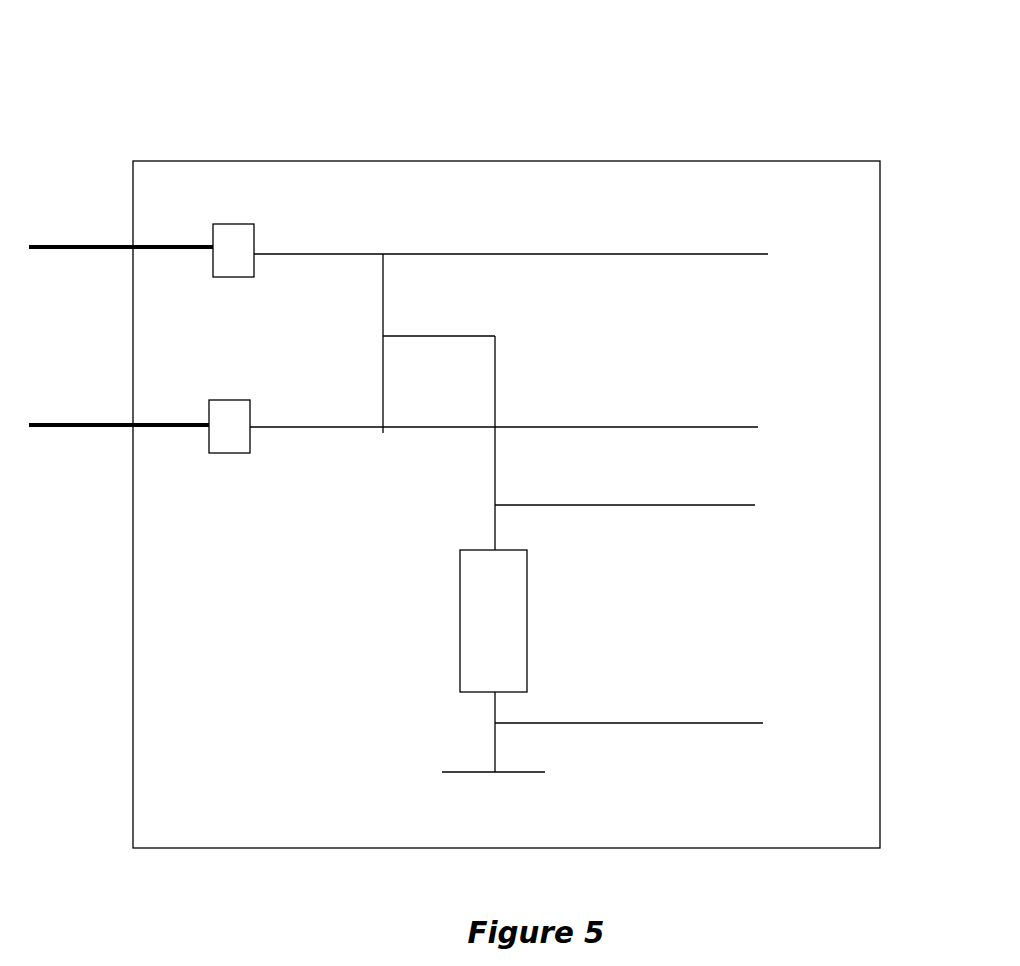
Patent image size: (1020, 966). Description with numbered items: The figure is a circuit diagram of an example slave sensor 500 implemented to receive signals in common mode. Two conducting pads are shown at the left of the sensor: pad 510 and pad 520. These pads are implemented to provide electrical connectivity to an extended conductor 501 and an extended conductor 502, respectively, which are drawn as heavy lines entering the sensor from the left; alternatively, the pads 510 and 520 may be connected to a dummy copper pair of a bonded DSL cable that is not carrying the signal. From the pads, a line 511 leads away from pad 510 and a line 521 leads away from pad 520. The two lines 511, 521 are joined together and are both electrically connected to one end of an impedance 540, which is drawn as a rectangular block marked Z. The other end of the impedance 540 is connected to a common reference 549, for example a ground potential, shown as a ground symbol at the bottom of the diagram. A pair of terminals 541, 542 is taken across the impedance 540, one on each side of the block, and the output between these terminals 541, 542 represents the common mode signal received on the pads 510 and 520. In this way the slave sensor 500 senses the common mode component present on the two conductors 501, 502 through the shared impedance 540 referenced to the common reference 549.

The slave sensor 500 is at (390, 104).
The extended conductor 501 is at (58, 243).
The extended conductor 502 is at (73, 422).
The pad 510 is at (233, 272).
The pad 520 is at (229, 452).
The line 511 is at (724, 258).
The line 521 is at (729, 427).
The impedance 540 is at (460, 628).
The terminal 541 is at (650, 506).
The terminal 542 is at (711, 723).
The common reference 549 is at (475, 773).